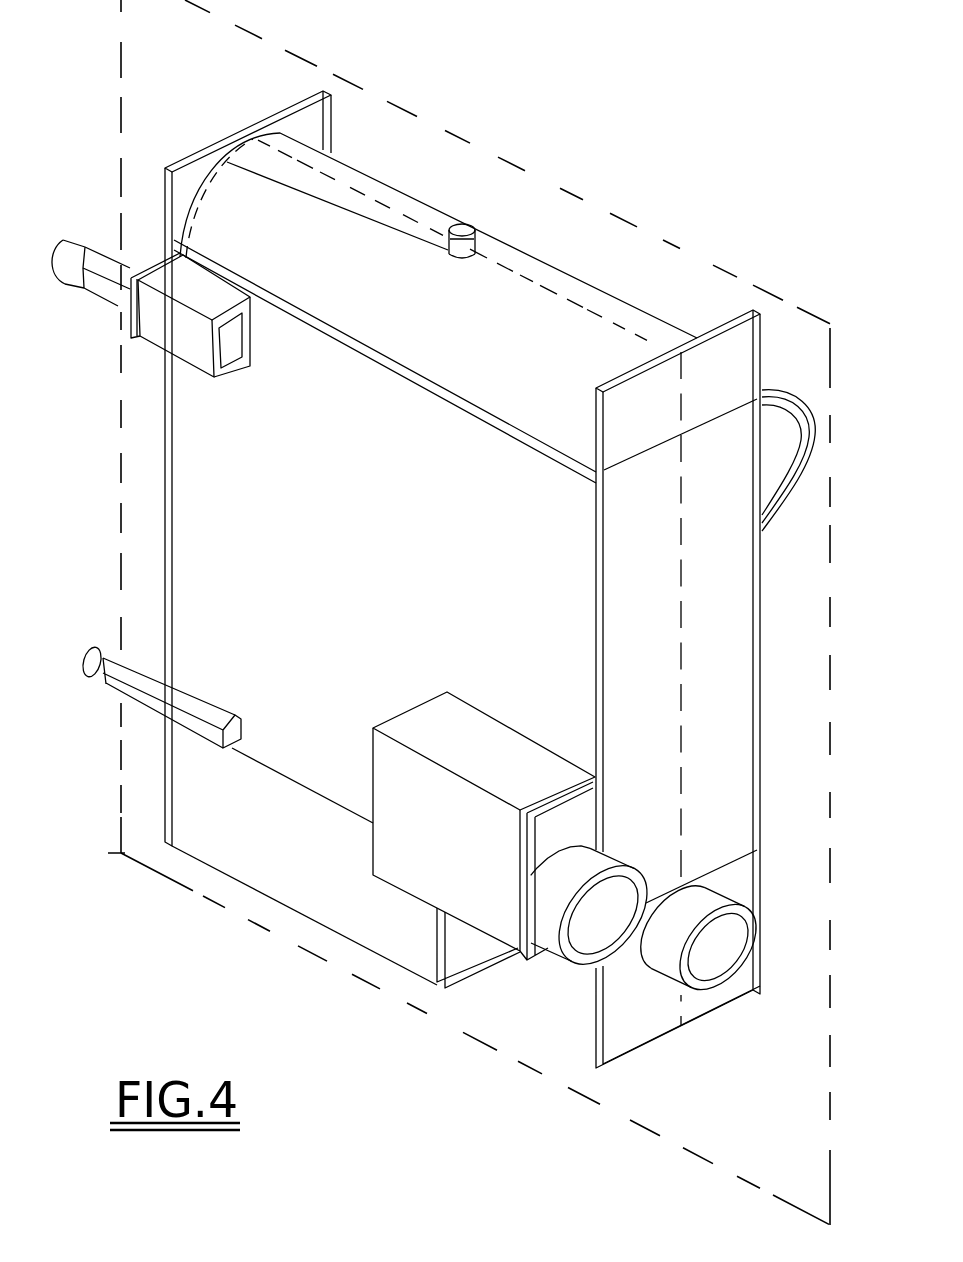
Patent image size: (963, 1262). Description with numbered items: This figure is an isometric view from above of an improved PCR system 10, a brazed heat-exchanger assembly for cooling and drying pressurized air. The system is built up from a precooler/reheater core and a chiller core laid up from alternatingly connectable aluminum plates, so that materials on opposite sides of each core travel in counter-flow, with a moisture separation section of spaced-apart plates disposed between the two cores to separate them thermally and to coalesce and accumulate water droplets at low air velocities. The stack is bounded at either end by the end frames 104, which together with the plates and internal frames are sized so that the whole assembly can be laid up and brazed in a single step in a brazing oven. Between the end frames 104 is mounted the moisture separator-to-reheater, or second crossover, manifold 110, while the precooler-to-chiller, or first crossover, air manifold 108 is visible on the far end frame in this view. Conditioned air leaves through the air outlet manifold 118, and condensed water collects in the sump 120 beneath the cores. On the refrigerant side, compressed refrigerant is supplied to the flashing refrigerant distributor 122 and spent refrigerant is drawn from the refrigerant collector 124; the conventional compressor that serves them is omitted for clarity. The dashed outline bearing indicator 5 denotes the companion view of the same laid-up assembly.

The improved PCR system 10 is at (657, 187).
The end frames 104 is at (166, 388).
The precooler-to-chiller (first crossover) air manifold 108 is at (818, 432).
The moisture separator-to-reheater (second crossover) manifold 110 is at (633, 322).
The air outlet manifold 118 is at (433, 877).
The sump 120 is at (287, 865).
The flashing refrigerant distributor 122 is at (185, 694).
The refrigerant collector 124 is at (232, 343).
The section view indicator (FIG. 5) 5 is at (833, 610).